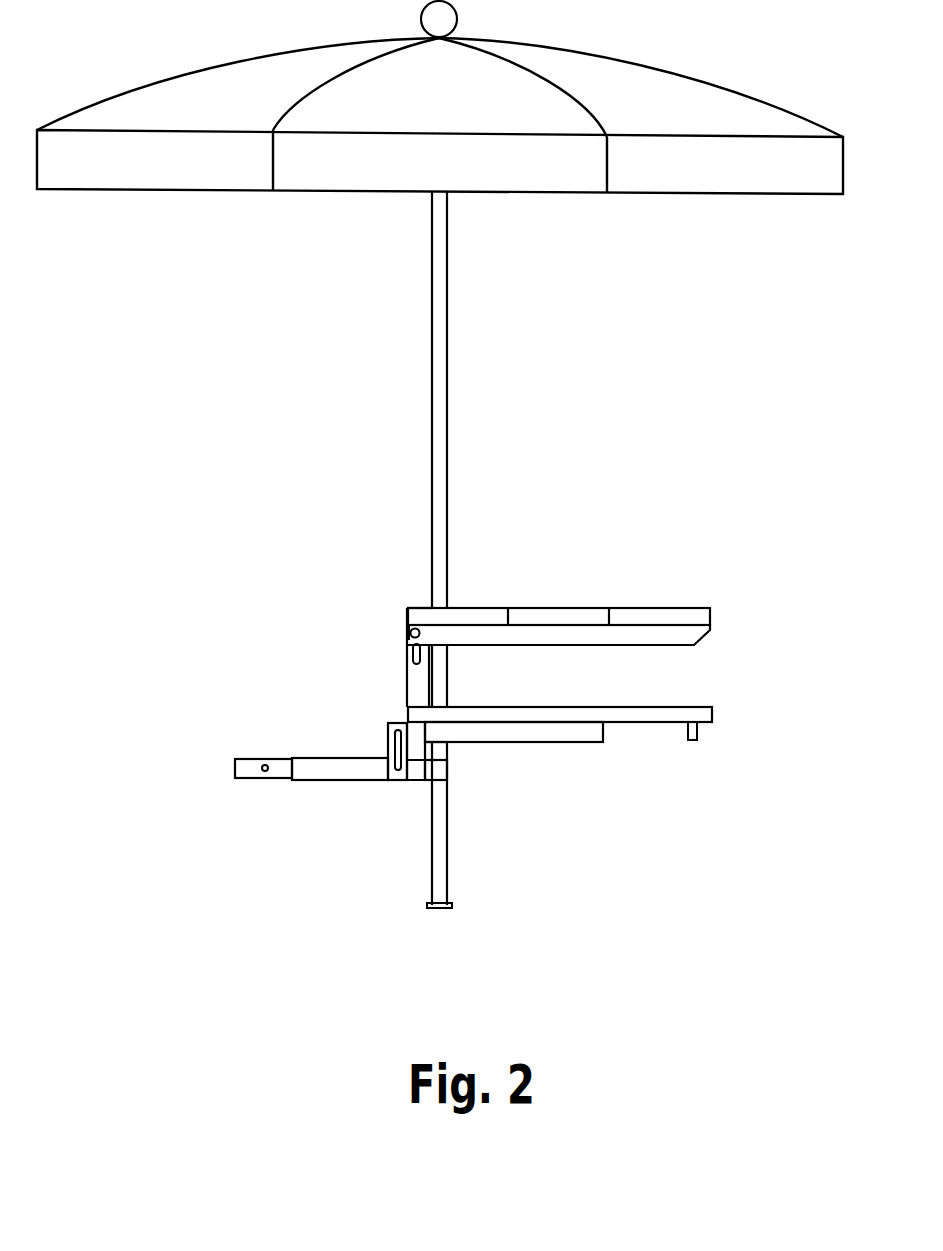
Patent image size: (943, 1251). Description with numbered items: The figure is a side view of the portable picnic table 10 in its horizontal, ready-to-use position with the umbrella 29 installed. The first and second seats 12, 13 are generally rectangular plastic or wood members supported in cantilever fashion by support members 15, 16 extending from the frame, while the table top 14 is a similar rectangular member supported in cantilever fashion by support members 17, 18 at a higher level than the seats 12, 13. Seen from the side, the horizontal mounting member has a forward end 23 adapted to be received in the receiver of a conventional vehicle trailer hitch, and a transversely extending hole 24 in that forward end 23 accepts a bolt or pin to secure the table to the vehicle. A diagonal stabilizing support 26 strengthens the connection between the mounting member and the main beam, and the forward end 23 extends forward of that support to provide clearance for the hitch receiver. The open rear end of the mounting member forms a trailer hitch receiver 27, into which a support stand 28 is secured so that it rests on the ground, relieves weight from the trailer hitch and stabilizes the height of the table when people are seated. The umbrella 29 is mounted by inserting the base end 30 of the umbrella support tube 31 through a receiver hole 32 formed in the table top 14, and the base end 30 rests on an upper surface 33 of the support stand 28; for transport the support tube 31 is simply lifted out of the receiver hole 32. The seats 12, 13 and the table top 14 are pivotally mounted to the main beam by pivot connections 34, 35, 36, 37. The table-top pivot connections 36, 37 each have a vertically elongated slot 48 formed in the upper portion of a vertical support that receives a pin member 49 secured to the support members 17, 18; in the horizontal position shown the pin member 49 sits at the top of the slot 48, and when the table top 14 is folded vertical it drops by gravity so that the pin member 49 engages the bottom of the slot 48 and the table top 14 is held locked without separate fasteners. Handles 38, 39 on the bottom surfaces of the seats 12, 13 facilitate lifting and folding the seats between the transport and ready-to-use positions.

The portable picnic table 10 is at (275, 915).
The first seat 12 is at (627, 699).
The second seat 13 is at (688, 712).
The table top 14 is at (657, 613).
The support member 15 is at (563, 764).
The support member 16 is at (572, 737).
The support member 17 is at (559, 658).
The support member 18 is at (575, 637).
The forward end 23 is at (245, 760).
The transversely extending hole 24 is at (268, 775).
The stabilizing support 26 is at (345, 768).
The trailer hitch receiver 27 is at (447, 772).
The support stand 28 is at (449, 873).
The umbrella 29 is at (548, 178).
The base end 30 is at (440, 683).
The umbrella support tube 31 is at (447, 506).
The receiver hole 32 is at (448, 608).
The upper surface 33 is at (447, 752).
The pivot connection 34 is at (342, 716).
The pivot connection 35 is at (395, 725).
The pivot connection 36 is at (354, 609).
The pivot connection 37 is at (354, 609).
The handle 38 is at (771, 749).
The handle 39 is at (700, 735).
The vertically elongated slot 48 is at (420, 655).
The pin member 49 is at (412, 630).